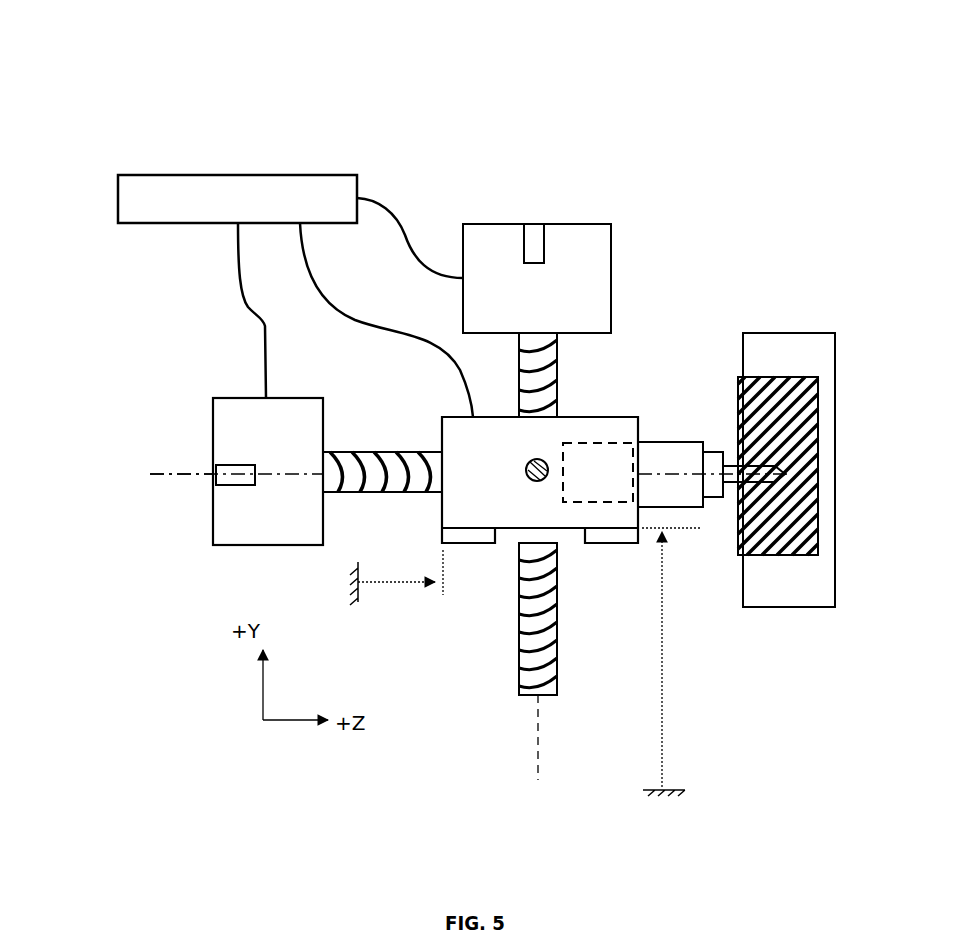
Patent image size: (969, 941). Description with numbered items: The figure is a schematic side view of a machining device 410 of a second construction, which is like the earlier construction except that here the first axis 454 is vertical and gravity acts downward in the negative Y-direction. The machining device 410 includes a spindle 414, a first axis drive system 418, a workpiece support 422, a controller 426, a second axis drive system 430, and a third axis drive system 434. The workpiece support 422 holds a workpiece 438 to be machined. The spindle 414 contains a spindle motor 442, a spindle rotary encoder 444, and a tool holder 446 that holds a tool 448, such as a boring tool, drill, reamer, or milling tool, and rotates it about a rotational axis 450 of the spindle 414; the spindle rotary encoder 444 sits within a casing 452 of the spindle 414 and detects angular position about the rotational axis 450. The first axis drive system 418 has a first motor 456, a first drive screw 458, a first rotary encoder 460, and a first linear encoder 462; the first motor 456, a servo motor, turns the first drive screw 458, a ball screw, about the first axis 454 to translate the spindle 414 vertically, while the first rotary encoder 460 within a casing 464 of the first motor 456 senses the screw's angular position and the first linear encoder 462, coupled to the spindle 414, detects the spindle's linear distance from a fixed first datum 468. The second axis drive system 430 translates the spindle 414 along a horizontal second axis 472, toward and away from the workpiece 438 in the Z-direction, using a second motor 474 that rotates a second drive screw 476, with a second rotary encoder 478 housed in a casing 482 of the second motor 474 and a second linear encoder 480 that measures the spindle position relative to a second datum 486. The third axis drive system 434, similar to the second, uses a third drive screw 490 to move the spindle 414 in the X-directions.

The machining device 410 is at (145, 95).
The spindle 414 is at (602, 415).
The first axis drive system 418 is at (624, 242).
The workpiece support 422 is at (835, 348).
The controller 426 is at (160, 175).
The second axis drive system 430 is at (196, 547).
The third axis drive system 434 is at (516, 474).
The workpiece 438 is at (782, 377).
The spindle motor 442 is at (606, 445).
The spindle rotary encoder 444 is at (636, 460).
The tool holder 446 is at (685, 442).
The tool 448 is at (775, 466).
The rotational axis 450 is at (706, 507).
The casing 452 is at (586, 545).
The first axis 454 is at (547, 757).
The first motor 456 is at (480, 223).
The first drive screw 458 is at (550, 698).
The first rotary encoder 460 is at (530, 223).
The first linear encoder 462 is at (638, 545).
The casing 464 is at (510, 223).
The first datum 468 is at (678, 780).
The second axis 472 is at (158, 471).
The second motor 474 is at (212, 433).
The second drive screw 476 is at (393, 452).
The second rotary encoder 478 is at (240, 487).
The second linear encoder 480 is at (447, 545).
The casing 482 is at (222, 398).
The second datum 486 is at (364, 572).
The third drive screw 490 is at (530, 481).